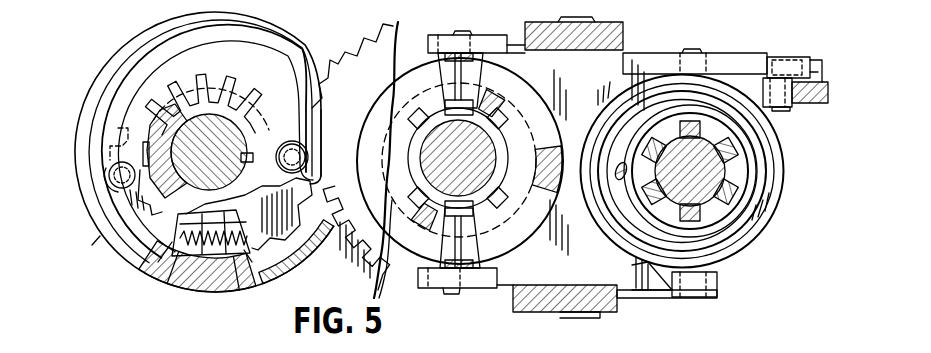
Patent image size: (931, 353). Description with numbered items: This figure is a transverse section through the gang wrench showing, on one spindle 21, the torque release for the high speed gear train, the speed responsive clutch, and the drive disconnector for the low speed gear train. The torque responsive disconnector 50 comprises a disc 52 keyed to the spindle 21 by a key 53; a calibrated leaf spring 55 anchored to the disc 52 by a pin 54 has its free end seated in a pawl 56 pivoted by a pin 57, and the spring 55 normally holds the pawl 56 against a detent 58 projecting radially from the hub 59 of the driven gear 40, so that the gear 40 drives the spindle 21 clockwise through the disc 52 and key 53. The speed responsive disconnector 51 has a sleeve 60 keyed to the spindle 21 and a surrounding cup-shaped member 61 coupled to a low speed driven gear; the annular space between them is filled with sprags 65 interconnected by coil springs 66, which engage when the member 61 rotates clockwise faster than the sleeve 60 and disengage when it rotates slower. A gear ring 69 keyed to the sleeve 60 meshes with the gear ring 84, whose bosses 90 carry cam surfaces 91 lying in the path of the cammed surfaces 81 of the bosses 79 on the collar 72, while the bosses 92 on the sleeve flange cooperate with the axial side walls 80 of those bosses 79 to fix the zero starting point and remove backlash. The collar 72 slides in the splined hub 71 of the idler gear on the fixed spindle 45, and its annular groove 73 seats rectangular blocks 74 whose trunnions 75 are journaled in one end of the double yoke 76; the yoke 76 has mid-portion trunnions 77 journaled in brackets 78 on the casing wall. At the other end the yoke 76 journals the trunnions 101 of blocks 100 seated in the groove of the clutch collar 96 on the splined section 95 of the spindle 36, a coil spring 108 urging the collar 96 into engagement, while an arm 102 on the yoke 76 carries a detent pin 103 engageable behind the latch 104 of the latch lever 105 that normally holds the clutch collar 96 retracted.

The spindle 21 is at (214, 100).
The spindle 36 is at (690, 171).
The driven gear 40 is at (238, 78).
The spindle 45 is at (339, 158).
The torque responsive disconnector 50 is at (108, 101).
The speed responsive disconnector 51 is at (214, 292).
The disc 52 is at (112, 232).
The key 53 is at (253, 157).
The pin 54 is at (300, 157).
The leaf spring 55 is at (136, 70).
The pawl 56 is at (118, 134).
The pin 57 is at (108, 182).
The detent 58 is at (152, 196).
The hub 59 is at (160, 116).
The sleeve 60 is at (222, 213).
The cup-shaped member 61 is at (156, 274).
The sprags 65 is at (190, 264).
The coil springs 66 is at (248, 284).
The gear ring 69 is at (300, 250).
The splined hub 71 is at (548, 244).
The collar 72 is at (540, 208).
The annular groove 73 is at (506, 103).
The rectangular blocks 74 is at (416, 68).
The trunnions 75 is at (458, 31).
The double yoke 76 is at (636, 60).
The trunnions 77 is at (584, 18).
The brackets 78 is at (630, 32).
The bosses 79 is at (482, 45).
The axial side wall 80 is at (478, 82).
The cammed surface 81 is at (445, 109).
The gear ring 84 is at (336, 56).
The bosses 90 is at (374, 124).
The cam surface 91 is at (556, 152).
The bosses 92 is at (370, 208).
The splined section 95 is at (745, 168).
The clutch collar 96 is at (776, 212).
The blocks 100 is at (702, 62).
The trunnions 101 is at (702, 50).
The arm 102 is at (774, 56).
The detent pin 103 is at (814, 80).
The latch 104 is at (766, 62).
The latch lever 105 is at (830, 80).
The coil spring 108 is at (785, 167).